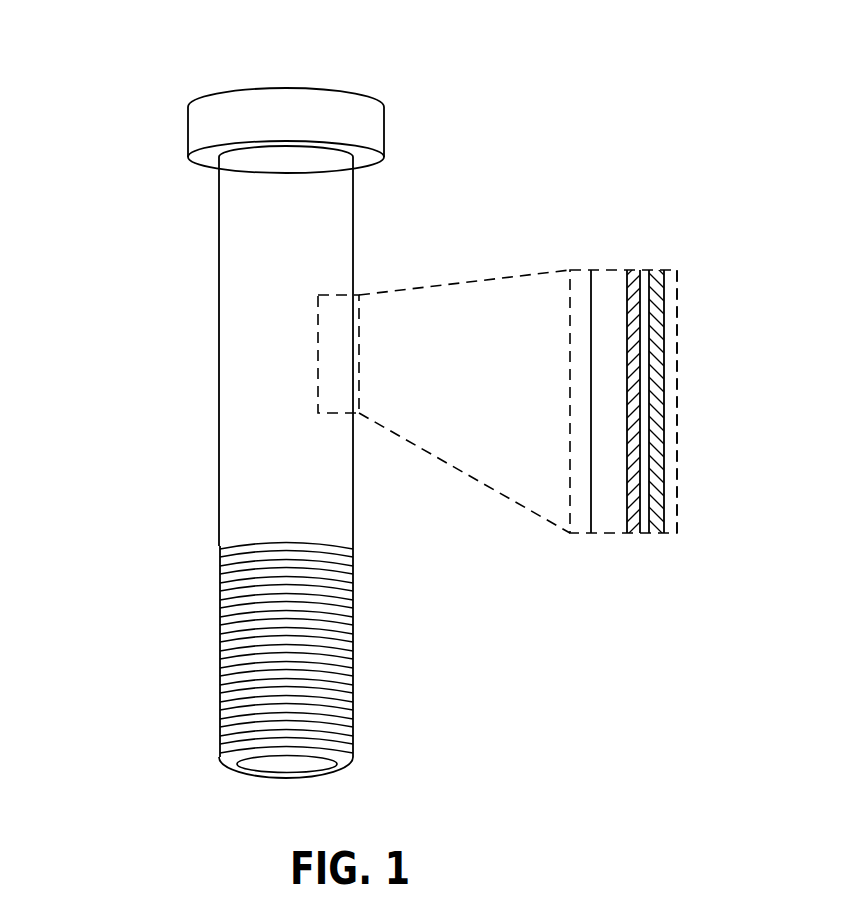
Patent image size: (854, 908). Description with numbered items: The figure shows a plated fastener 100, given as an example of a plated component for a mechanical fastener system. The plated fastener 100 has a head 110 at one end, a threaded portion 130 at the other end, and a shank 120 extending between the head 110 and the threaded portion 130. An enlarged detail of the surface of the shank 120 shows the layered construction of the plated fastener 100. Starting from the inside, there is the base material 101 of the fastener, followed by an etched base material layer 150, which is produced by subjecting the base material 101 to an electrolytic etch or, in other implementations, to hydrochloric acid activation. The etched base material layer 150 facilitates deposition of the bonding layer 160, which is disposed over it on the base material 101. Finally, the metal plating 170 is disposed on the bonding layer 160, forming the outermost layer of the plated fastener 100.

The plated fastener 100 is at (138, 46).
The head 110 is at (373, 128).
The shank 120 is at (237, 338).
The threaded portion 130 is at (222, 618).
The base material 101 is at (608, 287).
The etched base material layer 150 is at (637, 283).
The bonding layer 160 is at (648, 278).
The metal plating 170 is at (655, 300).